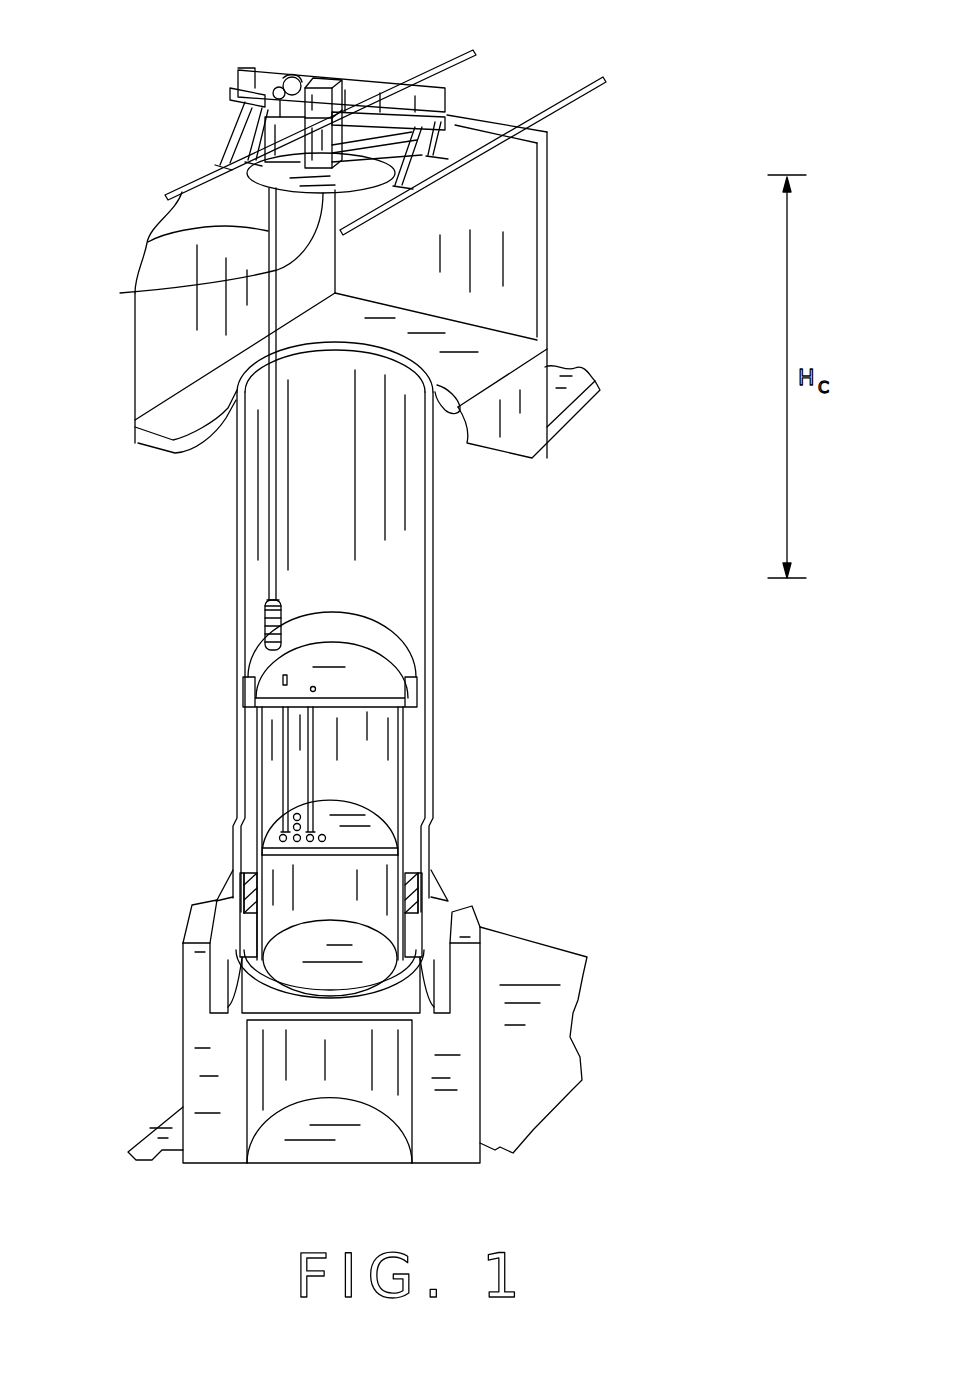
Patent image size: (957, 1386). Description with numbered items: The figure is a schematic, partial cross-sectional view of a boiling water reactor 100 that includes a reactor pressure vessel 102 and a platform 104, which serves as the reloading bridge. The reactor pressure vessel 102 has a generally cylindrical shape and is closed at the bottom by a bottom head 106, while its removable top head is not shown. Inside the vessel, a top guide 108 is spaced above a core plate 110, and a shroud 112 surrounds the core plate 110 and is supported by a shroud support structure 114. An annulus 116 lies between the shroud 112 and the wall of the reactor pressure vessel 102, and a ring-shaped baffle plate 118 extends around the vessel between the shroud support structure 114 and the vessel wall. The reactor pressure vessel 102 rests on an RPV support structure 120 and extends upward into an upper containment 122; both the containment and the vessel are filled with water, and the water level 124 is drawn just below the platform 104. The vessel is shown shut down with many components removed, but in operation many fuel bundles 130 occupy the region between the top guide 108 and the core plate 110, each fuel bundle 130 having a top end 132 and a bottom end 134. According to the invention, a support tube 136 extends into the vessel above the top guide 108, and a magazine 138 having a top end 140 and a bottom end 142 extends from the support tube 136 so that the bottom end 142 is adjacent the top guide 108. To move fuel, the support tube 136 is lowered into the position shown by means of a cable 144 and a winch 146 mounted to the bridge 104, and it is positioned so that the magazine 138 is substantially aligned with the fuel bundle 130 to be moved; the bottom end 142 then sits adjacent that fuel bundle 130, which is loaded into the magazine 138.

The boiling water reactor 100 is at (640, 272).
The reactor pressure vessel 102 is at (237, 565).
The platform 104 is at (377, 68).
The bottom head 106 is at (383, 985).
The top guide 108 is at (358, 670).
The core plate 110 is at (377, 828).
The shroud 112 is at (255, 730).
The shroud support structure 114 is at (247, 903).
The annulus 116 is at (247, 767).
The baffle plate 118 is at (418, 873).
The RPV support structure 120 is at (460, 1107).
The upper containment 122 is at (548, 362).
The water level 124 is at (196, 252).
The fuel bundles 130 is at (287, 783).
The top end 132 is at (285, 672).
The bottom end 134 is at (260, 843).
The support tube 136 is at (278, 445).
The magazine 138 is at (284, 620).
The top end 140 is at (283, 608).
The bottom end 142 is at (268, 648).
The cable 144 is at (147, 244).
The winch 146 is at (287, 83).